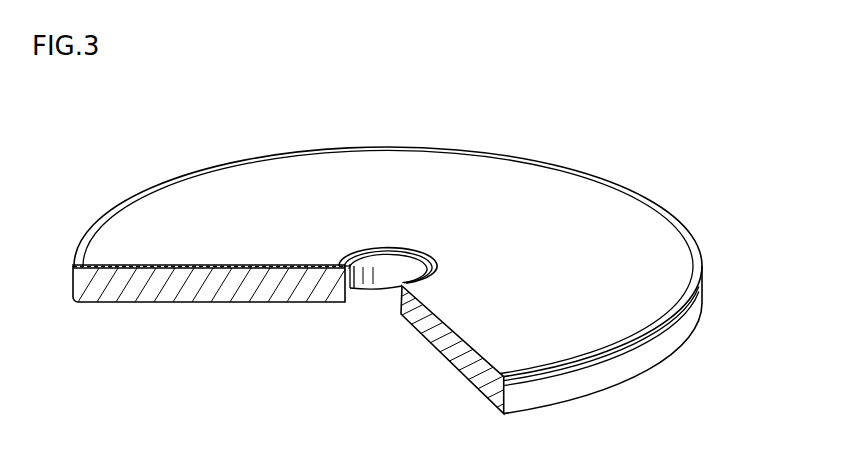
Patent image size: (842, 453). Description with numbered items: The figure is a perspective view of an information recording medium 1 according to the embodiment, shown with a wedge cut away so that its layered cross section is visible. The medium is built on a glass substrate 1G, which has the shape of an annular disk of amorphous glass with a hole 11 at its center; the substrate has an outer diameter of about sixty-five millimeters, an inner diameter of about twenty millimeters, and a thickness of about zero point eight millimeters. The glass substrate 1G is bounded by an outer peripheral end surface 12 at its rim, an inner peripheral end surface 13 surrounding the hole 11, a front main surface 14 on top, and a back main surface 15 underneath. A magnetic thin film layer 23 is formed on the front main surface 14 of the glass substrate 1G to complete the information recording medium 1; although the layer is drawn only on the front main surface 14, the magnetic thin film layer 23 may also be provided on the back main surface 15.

The information recording medium 1 is at (565, 106).
The information recording medium glass substrate 1G is at (693, 272).
The magnetic thin film layer 23 is at (592, 200).
The hole 11 is at (382, 289).
The outer peripheral end surface 12 is at (66, 288).
The inner peripheral end surface 13 is at (358, 292).
The front main surface 14 is at (188, 270).
The back main surface 15 is at (125, 301).